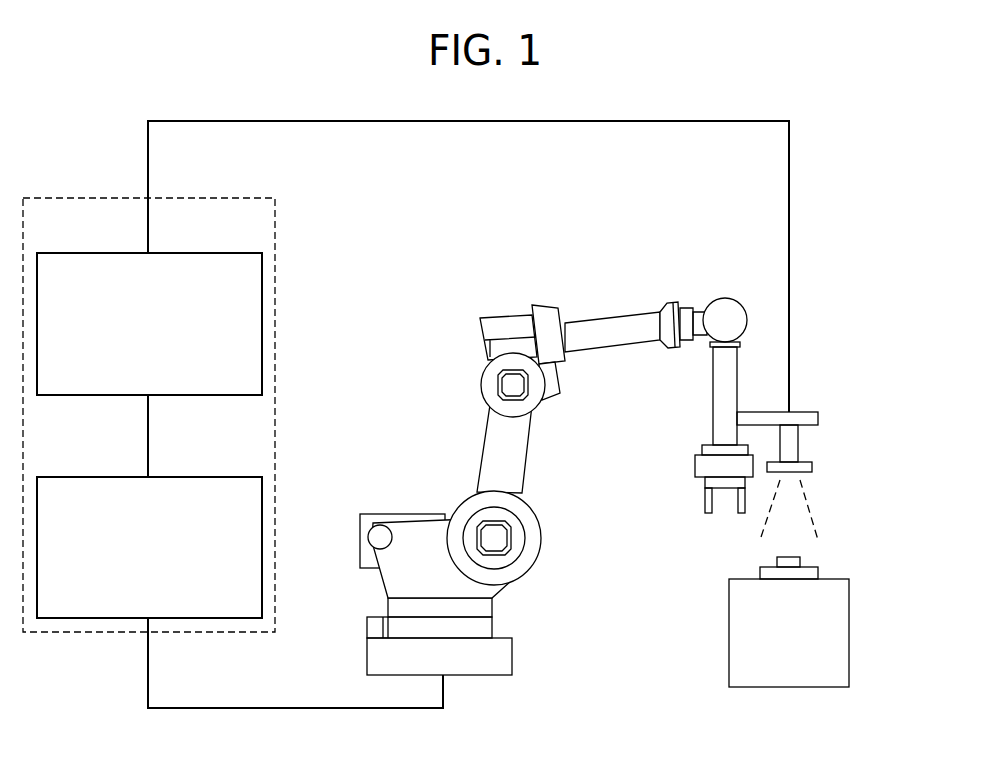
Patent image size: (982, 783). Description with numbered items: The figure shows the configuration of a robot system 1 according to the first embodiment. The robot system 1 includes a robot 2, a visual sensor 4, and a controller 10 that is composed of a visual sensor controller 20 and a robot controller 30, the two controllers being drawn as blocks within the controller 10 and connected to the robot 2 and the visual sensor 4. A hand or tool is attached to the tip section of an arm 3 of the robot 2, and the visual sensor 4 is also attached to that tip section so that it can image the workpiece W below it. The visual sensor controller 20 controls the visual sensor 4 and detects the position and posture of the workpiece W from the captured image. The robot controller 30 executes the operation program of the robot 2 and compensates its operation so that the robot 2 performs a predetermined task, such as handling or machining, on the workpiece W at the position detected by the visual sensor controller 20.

The robot system 1 is at (464, 403).
The robot 2 is at (418, 520).
The arm 3 is at (713, 418).
The visual sensor 4 is at (799, 445).
The controller 10 is at (77, 198).
The visual sensor controller 20 is at (195, 253).
The robot controller 30 is at (195, 477).
The workpiece W is at (803, 560).